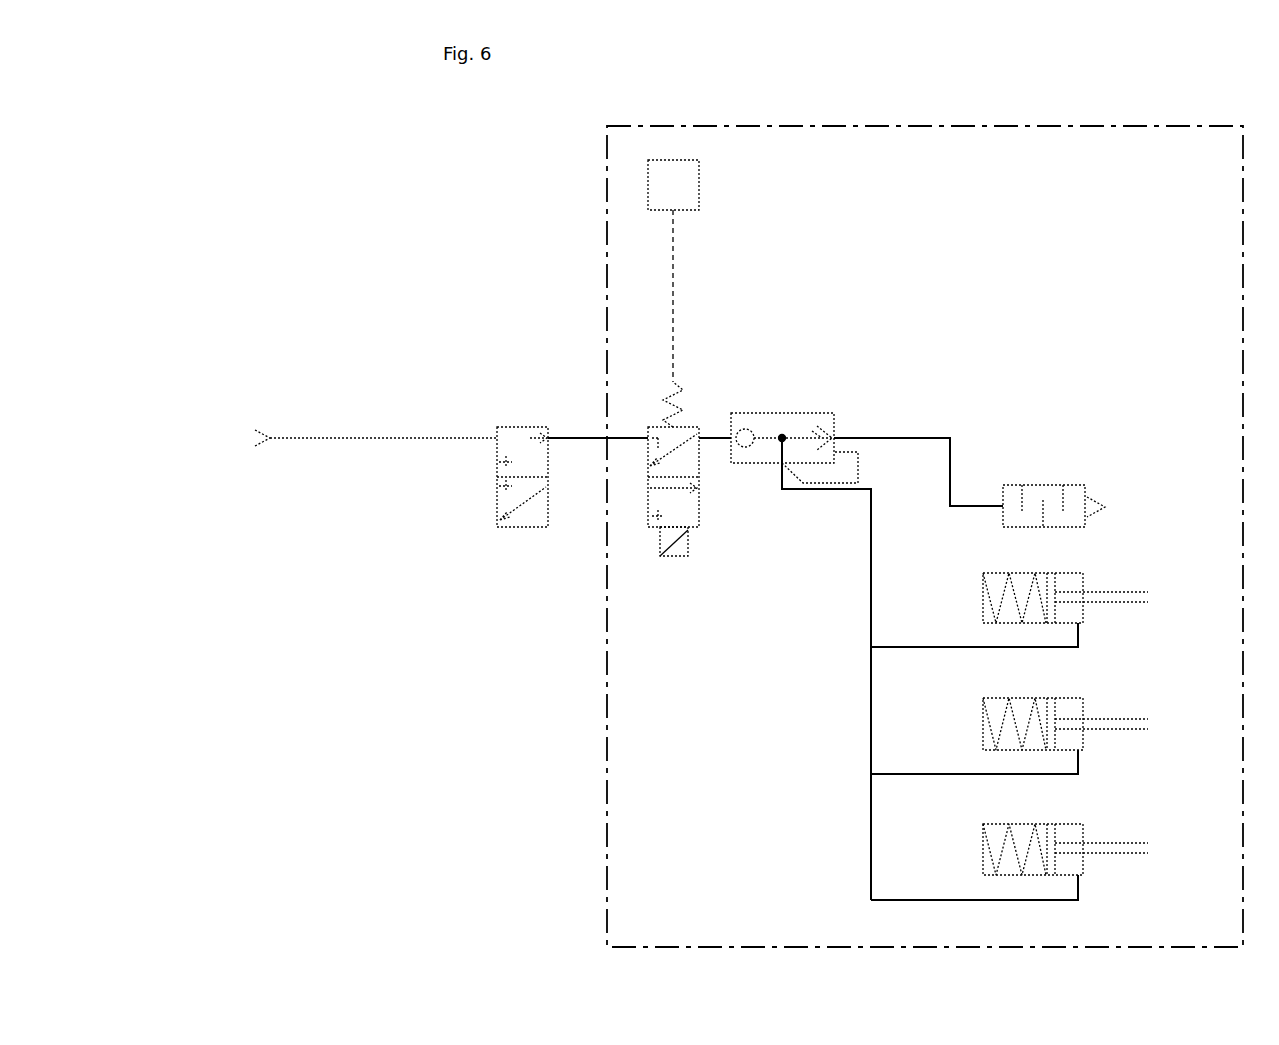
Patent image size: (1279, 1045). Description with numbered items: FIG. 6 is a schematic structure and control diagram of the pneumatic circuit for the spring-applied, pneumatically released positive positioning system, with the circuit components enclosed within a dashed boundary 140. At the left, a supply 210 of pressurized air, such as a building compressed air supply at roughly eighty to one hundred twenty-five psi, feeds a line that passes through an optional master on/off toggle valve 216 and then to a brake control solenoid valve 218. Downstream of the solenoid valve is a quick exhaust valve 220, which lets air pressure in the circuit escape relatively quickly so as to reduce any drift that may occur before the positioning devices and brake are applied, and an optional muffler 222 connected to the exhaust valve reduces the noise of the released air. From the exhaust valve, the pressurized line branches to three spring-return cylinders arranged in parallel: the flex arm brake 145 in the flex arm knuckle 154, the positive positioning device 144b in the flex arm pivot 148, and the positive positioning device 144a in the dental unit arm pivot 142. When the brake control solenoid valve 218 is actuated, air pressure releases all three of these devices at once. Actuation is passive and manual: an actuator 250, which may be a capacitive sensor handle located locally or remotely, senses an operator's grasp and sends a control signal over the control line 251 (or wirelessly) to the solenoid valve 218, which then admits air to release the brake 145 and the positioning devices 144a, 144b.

The pneumatic control unit housing 140 is at (607, 295).
The supply of pressurized air 210 is at (255, 438).
The master on/off toggle valve 216 is at (520, 428).
The brake control solenoid valve 218 is at (673, 560).
The quick exhaust valve 220 is at (800, 413).
The muffler 222 is at (1085, 493).
The actuator 250 is at (699, 197).
The control line 251 is at (673, 285).
The flex arm brake 145 is at (1085, 582).
The flex arm knuckle 154 is at (1158, 600).
The positive positioning device 144b is at (1083, 710).
The flex arm pivot 148 is at (1158, 701).
The positive positioning device 144a is at (1083, 830).
The dental unit arm pivot 142 is at (1158, 821).